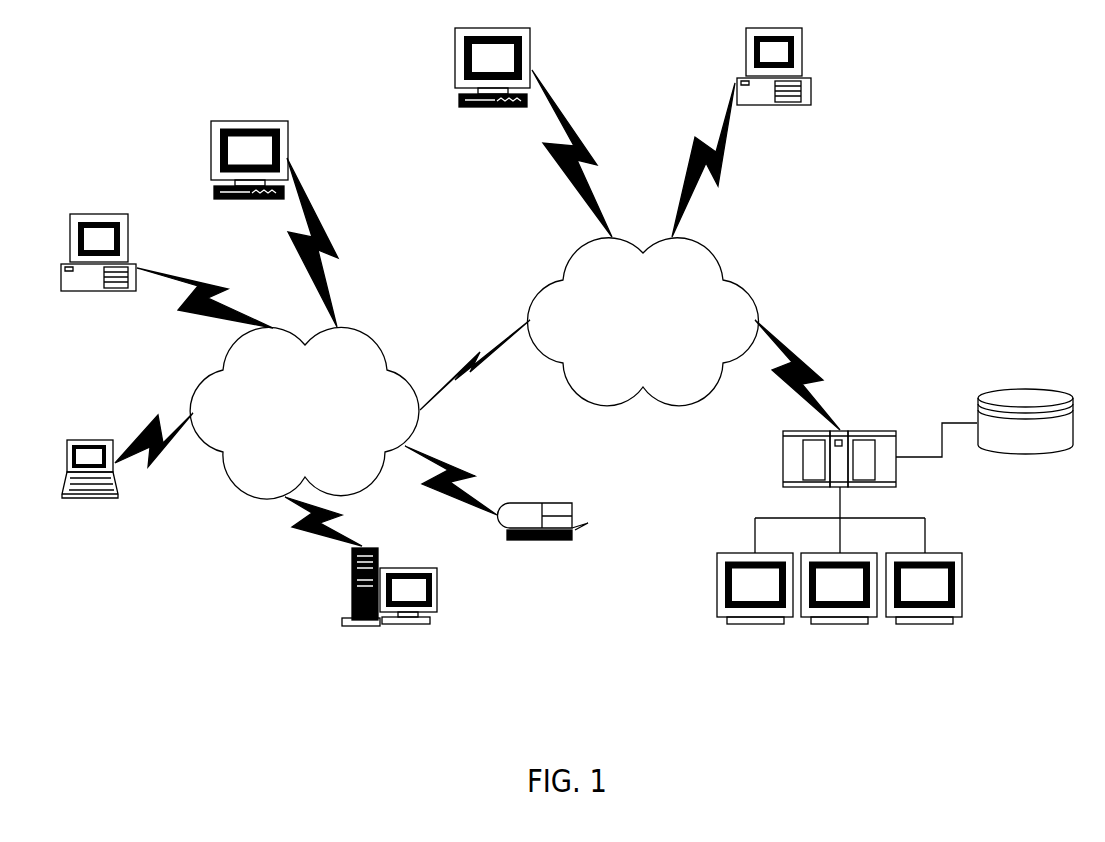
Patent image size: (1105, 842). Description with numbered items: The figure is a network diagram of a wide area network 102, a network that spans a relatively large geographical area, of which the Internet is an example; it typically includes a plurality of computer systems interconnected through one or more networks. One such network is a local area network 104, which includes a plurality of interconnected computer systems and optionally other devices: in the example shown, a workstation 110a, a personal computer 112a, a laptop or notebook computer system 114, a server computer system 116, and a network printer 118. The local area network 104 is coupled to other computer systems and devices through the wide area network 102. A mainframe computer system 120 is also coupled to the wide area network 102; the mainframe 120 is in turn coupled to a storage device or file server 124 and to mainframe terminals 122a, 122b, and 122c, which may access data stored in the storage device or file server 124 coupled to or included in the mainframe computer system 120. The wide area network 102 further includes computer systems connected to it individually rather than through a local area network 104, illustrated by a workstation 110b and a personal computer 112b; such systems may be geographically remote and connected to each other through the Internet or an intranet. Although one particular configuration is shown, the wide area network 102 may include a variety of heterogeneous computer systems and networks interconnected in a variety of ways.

The wide area network 102 is at (642, 322).
The local area network 104 is at (304, 413).
The workstation 110a is at (265, 207).
The workstation 110b is at (500, 113).
The personal computer 112a is at (125, 296).
The personal computer 112b is at (772, 110).
The laptop or notebook computer system 114 is at (82, 502).
The server computer system 116 is at (388, 625).
The network printer 118 is at (535, 545).
The mainframe computer system 120 is at (775, 447).
The mainframe terminal 122a is at (755, 628).
The mainframe terminal 122b is at (822, 628).
The mainframe terminal 122c is at (962, 590).
The storage device or file server 124 is at (1018, 467).